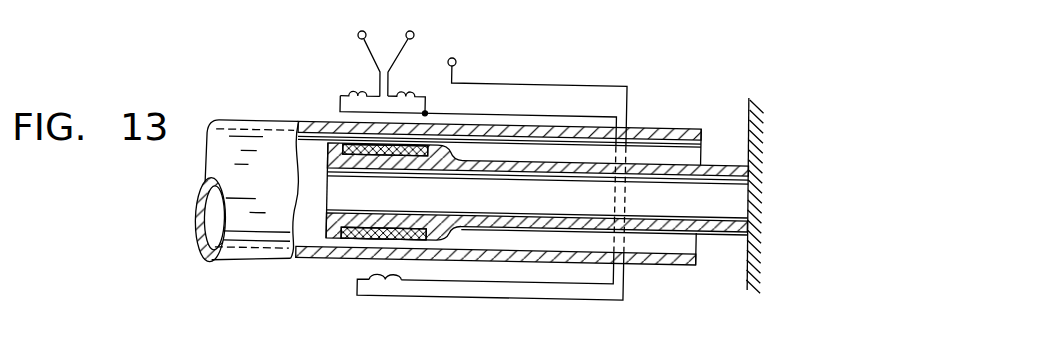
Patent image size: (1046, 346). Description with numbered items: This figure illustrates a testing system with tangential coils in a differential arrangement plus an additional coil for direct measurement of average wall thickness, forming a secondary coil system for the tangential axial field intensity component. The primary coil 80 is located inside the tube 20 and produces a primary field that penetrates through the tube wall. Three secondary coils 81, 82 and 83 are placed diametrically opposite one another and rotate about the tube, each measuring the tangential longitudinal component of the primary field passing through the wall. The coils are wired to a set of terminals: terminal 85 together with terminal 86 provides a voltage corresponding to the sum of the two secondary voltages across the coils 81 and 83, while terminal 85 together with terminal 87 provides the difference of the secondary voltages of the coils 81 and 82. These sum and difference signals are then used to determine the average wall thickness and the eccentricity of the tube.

The tube 20 is at (641, 256).
The primary coil 80 is at (356, 236).
The secondary coil 81 is at (384, 283).
The secondary coil 82 is at (352, 92).
The secondary coil 83 is at (410, 88).
The terminal 85 is at (454, 60).
The terminal 86 is at (411, 31).
The terminal 87 is at (355, 32).